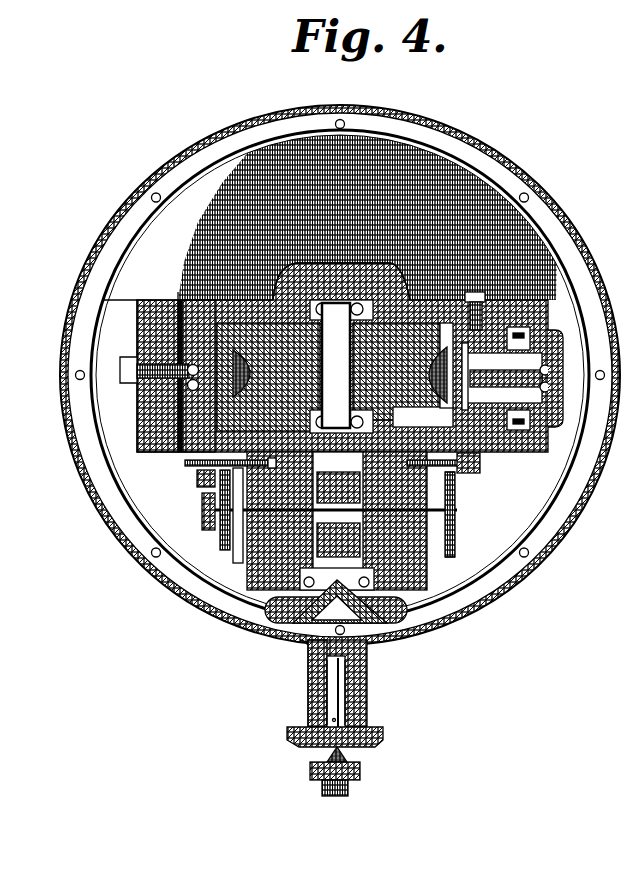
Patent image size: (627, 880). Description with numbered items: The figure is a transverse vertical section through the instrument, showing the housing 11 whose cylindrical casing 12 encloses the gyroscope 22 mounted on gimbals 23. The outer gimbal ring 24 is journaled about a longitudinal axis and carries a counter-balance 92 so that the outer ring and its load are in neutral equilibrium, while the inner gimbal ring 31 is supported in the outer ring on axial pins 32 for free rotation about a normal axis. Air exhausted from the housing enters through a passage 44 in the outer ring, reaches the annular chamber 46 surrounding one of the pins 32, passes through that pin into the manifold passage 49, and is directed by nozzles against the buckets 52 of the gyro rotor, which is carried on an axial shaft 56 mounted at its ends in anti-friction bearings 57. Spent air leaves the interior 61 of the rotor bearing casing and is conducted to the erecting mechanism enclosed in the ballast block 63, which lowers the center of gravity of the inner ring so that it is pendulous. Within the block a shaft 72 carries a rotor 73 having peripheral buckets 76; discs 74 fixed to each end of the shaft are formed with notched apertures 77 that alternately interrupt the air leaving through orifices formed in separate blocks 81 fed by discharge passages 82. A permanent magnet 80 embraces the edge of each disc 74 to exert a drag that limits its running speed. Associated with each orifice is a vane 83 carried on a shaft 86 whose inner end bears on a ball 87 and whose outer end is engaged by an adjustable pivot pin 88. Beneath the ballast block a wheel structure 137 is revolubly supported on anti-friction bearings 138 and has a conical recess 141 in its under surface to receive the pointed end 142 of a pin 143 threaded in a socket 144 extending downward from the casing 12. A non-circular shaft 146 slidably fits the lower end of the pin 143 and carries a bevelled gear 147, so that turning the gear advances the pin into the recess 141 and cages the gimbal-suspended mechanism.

The housing 11 is at (537, 170).
The casing 12 is at (583, 224).
The gyroscope 22 is at (362, 262).
The gimbals 23 is at (416, 298).
The outer gimbal ring 24 is at (145, 425).
The inner gimbal ring 31 is at (185, 335).
The axial pins 32 is at (140, 370).
The passage 44 is at (205, 355).
The annular chamber 46 is at (556, 328).
The manifold passage 49 is at (222, 297).
The buckets 52 is at (270, 300).
The axial shaft 56 is at (341, 366).
The anti-friction bearings 57 is at (313, 268).
The interior of the rotor bearing casing 61 is at (243, 297).
The ballast block 63 is at (440, 620).
The shaft 72 is at (215, 525).
The rotor 73 is at (267, 605).
The discs 74 is at (225, 537).
The buckets 76 is at (345, 474).
The apertures 77 is at (372, 533).
The permanent magnet 80 is at (208, 510).
The blocks 81 is at (420, 572).
The discharge passages 82 is at (238, 540).
The vane 83 is at (445, 557).
The shaft 86 is at (455, 492).
The ball 87 is at (215, 488).
The adjustable pivot pin 88 is at (482, 465).
The counter-balance 92 is at (440, 190).
The wheel structure 137 is at (405, 645).
The anti-friction bearings 138 is at (298, 622).
The conical recess 141 is at (372, 648).
The pointed end 142 is at (310, 655).
The pin 143 is at (358, 696).
The socket 144 is at (312, 710).
The non-circular shaft 146 is at (356, 710).
The bevelled gear 147 is at (300, 742).